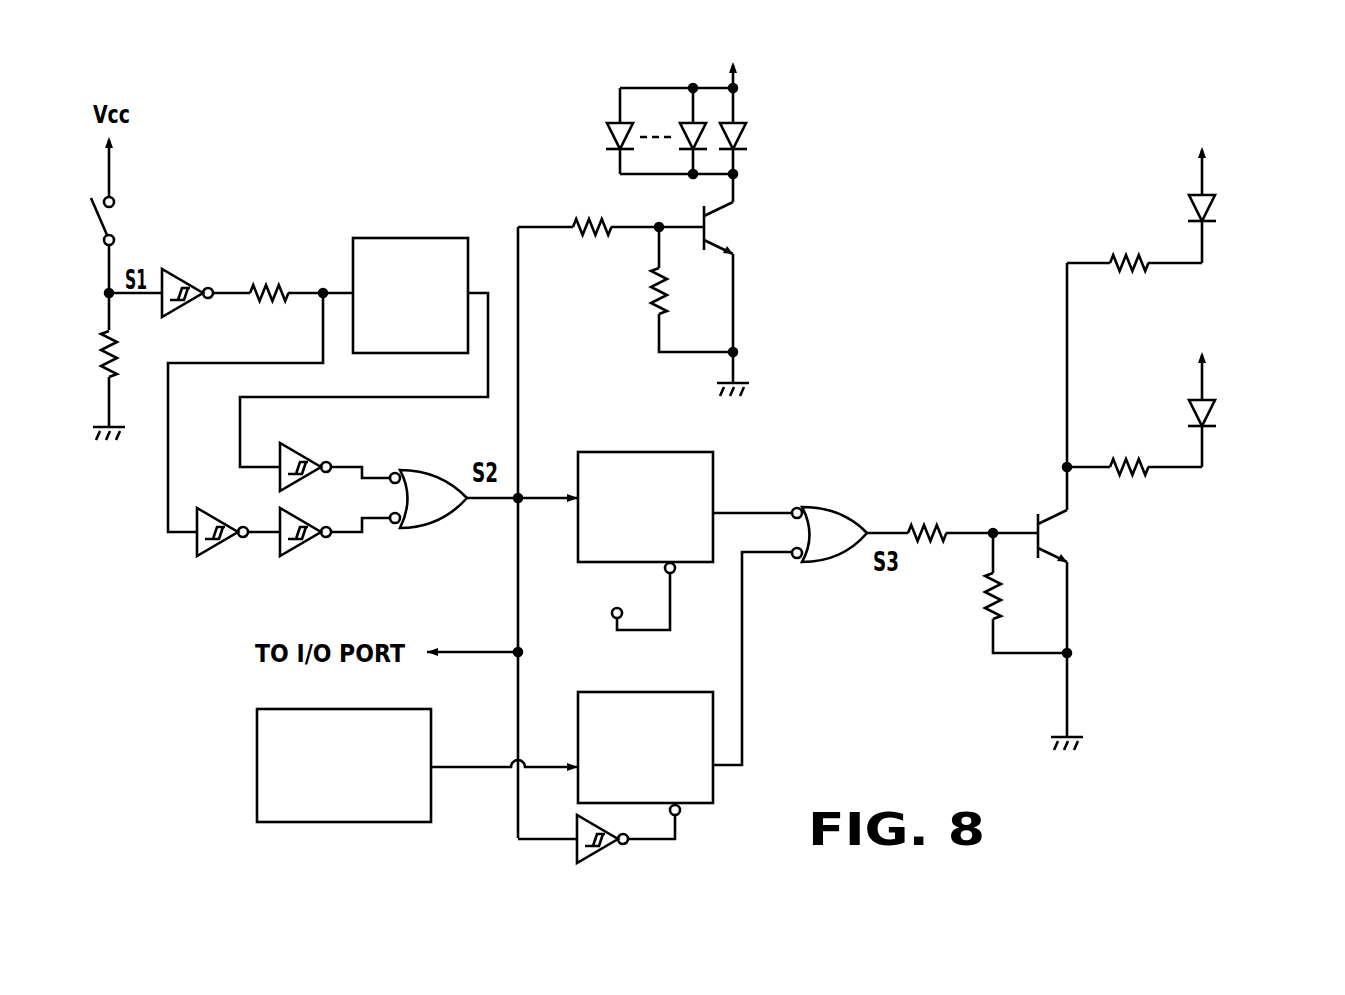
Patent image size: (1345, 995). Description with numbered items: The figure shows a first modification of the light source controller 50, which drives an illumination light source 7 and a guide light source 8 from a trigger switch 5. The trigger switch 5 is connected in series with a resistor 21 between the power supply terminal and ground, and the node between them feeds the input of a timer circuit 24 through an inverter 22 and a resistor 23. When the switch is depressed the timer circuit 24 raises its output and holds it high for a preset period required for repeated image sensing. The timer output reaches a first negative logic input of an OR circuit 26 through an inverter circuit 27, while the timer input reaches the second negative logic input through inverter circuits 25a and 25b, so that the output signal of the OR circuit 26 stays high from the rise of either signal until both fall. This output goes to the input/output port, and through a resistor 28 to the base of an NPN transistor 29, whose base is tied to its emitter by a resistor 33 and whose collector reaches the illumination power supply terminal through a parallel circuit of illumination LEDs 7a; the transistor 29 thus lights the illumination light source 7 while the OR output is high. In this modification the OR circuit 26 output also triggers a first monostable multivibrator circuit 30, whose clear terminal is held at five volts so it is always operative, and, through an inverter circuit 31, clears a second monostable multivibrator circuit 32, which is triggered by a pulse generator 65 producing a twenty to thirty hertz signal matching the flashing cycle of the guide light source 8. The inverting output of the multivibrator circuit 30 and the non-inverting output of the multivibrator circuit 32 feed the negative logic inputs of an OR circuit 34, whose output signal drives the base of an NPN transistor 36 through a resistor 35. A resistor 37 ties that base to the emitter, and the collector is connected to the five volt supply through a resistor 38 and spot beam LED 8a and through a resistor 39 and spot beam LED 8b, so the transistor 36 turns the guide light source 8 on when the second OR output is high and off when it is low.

The trigger switch 5 is at (112, 217).
The resistor 21 is at (98, 350).
The inverter 22 is at (194, 262).
The resistor 23 is at (268, 281).
The timer circuit 24 is at (408, 238).
The inverter circuit 25a is at (218, 553).
The inverter circuit 25b is at (300, 553).
The OR circuit 26 is at (435, 528).
The inverter circuit 27 is at (307, 445).
The resistor 28 is at (592, 215).
The NPN transistor 29 is at (738, 229).
The first monostable multivibrator circuit 30 is at (658, 452).
The inverter circuit 31 is at (598, 858).
The second monostable multivibrator circuit 32 is at (660, 692).
The resistor 33 is at (648, 288).
The OR circuit 34 is at (852, 508).
The resistor 35 is at (930, 522).
The NPN transistor 36 is at (1058, 536).
The resistor 37 is at (976, 598).
The resistor 38 is at (1130, 258).
The resistor 39 is at (1130, 462).
The illumination light source 7 is at (705, 101).
The illumination LEDs 7a is at (757, 131).
The guide light source 8 is at (1198, 293).
The spot beam LED 8a is at (1218, 208).
The spot beam LED 8b is at (1226, 391).
The light source controller 50 is at (970, 125).
The pulse generator 65 is at (432, 733).